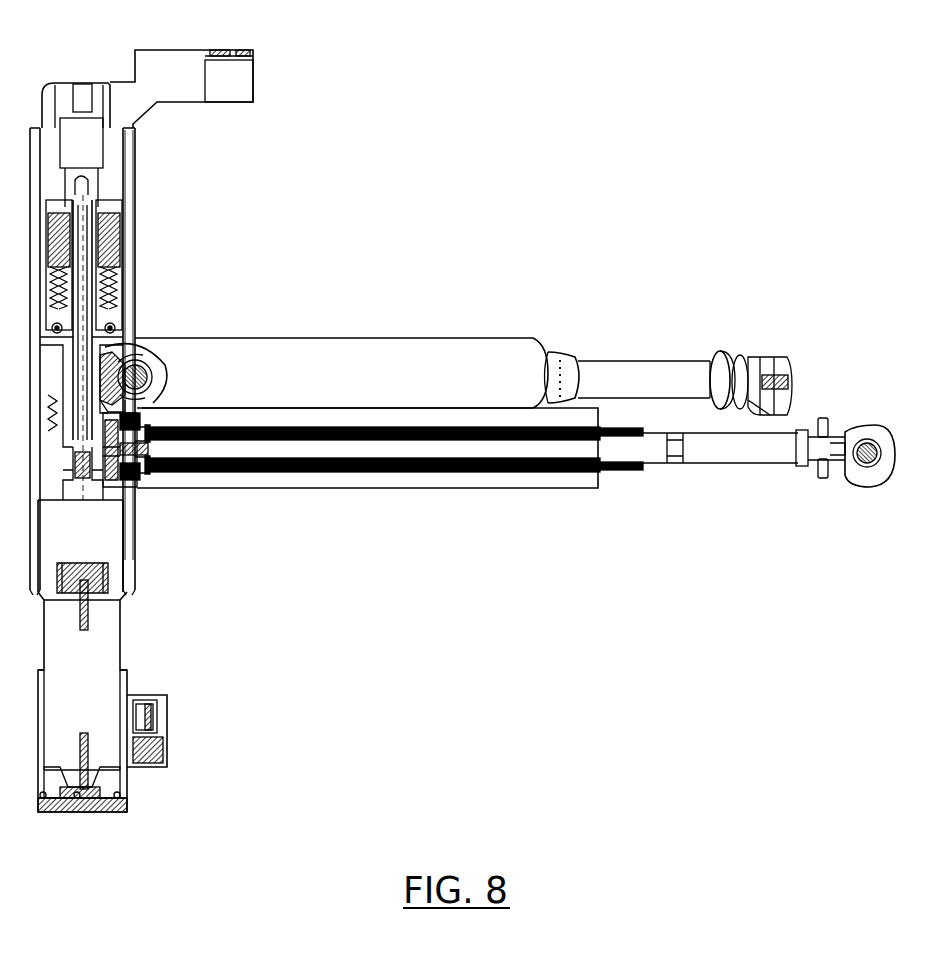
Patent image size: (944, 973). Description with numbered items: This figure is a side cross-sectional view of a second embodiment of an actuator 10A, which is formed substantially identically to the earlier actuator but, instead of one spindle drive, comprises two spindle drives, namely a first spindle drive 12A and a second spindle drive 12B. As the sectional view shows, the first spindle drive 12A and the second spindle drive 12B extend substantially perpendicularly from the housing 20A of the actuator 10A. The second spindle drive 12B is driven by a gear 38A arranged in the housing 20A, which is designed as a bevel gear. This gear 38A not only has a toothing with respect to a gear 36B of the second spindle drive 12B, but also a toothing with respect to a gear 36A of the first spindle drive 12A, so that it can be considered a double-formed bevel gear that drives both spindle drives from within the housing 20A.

The actuator 10A is at (412, 132).
The first spindle drive 12A is at (608, 298).
The second spindle drive 12B is at (678, 502).
The housing 20A is at (133, 213).
The gear of the first spindle drive 36A is at (112, 380).
The gear of the second spindle drive 36B is at (115, 467).
The gear 38A is at (145, 373).